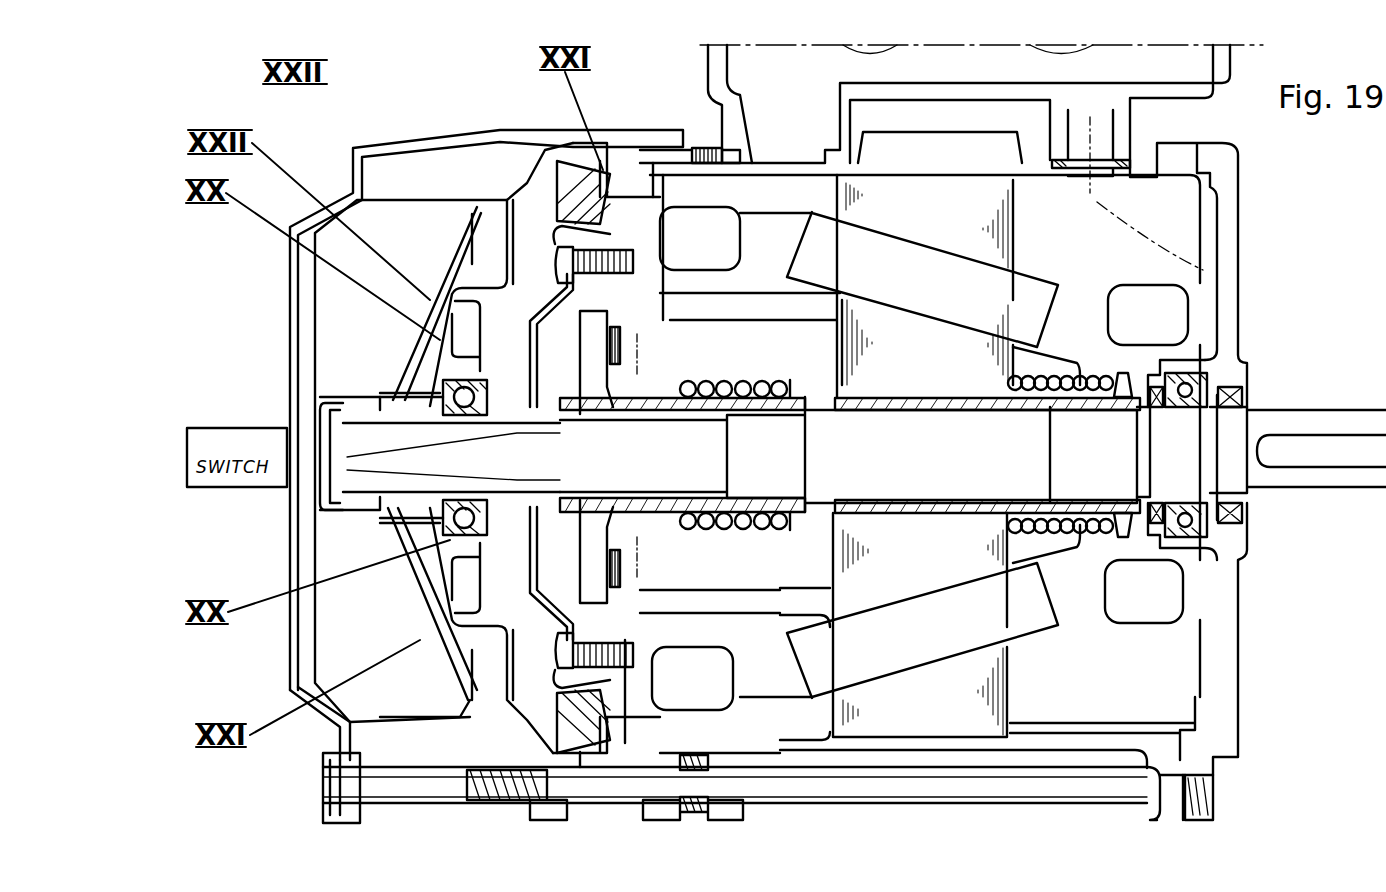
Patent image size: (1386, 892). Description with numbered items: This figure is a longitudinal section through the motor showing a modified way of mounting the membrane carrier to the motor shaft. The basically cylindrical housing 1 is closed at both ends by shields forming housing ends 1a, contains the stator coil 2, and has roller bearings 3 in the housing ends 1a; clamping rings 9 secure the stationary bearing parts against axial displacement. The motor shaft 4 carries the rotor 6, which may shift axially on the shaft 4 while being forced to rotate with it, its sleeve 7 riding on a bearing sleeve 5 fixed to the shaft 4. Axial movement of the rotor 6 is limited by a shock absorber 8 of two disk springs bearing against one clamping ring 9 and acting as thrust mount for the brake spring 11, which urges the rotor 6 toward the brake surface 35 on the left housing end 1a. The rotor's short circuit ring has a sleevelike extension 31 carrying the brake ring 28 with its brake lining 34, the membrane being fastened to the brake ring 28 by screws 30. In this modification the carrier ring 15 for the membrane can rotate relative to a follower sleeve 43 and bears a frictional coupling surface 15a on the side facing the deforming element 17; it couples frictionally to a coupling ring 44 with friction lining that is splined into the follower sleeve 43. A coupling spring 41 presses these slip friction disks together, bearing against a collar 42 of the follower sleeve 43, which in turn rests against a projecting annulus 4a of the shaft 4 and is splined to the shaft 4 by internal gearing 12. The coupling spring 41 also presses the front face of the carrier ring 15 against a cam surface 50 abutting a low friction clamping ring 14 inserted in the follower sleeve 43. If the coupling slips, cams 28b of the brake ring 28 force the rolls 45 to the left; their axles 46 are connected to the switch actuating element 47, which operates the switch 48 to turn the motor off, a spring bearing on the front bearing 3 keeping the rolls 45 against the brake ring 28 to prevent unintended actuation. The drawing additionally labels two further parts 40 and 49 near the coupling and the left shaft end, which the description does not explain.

The housing 1 is at (648, 162).
The housing end 1a is at (1223, 243).
The stator coil 2 is at (750, 188).
The roller bearing 3 is at (590, 448).
The motor shaft 4 is at (1190, 535).
The projecting annulus 4a is at (1090, 495).
The bearing sleeve 5 is at (1150, 525).
The rotor 6 is at (975, 563).
The sleeve 7 is at (1075, 540).
The shock absorber 8 is at (1165, 362).
The clamping ring 9 is at (1243, 383).
The brake spring 11 is at (1140, 340).
The internal gearing 12 is at (705, 523).
The clamping ring 14 is at (560, 430).
The carrier ring 15 is at (492, 300).
The frictional coupling surface 15a is at (470, 282).
The deforming element 17 is at (520, 282).
The brake ring 28 is at (450, 262).
The cam 28b is at (470, 362).
The screw 30 is at (548, 262).
The sleevelike extension 31 is at (617, 232).
The brake lining 34 is at (588, 252).
The brake surface 35 is at (563, 252).
The bolt 40 is at (628, 302).
The coupling spring 41 is at (780, 374).
The collar 42 is at (1000, 362).
The follower sleeve 43 is at (800, 381).
The coupling ring 44 is at (664, 330).
The roll 45 is at (480, 380).
The axle 46 is at (455, 395).
The switch actuating element 47 is at (292, 398).
The switch 48 is at (287, 428).
The sleeve 49 is at (470, 400).
The cam surface 50 is at (560, 420).